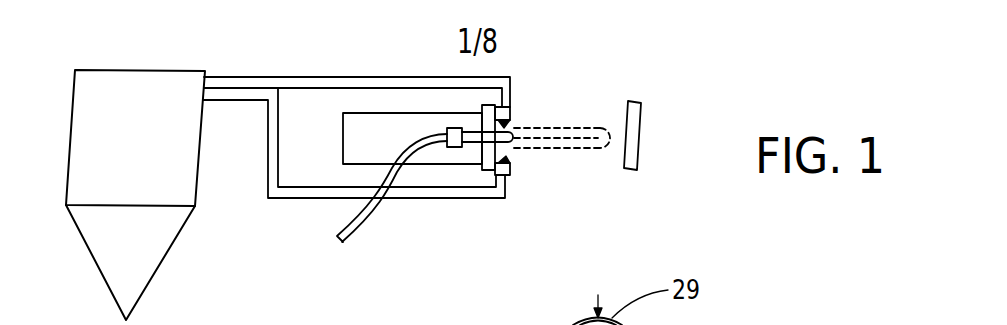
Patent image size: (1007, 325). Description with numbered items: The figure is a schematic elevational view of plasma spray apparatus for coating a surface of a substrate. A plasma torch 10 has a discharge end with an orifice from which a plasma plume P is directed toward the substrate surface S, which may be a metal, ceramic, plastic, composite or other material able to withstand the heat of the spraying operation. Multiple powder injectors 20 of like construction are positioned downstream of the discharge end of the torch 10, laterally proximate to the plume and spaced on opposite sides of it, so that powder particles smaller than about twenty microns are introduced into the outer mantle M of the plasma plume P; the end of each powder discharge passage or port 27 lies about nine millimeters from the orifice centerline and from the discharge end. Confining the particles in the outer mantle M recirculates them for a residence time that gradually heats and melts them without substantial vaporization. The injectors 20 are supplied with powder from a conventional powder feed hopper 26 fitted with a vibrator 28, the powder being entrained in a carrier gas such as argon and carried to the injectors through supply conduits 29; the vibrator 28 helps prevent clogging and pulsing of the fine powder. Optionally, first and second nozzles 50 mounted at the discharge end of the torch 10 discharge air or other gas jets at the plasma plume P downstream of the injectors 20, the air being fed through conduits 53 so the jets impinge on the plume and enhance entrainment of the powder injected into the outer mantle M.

The plasma torch 10 is at (343, 148).
The powder injectors 20 is at (516, 119).
The powder feed hopper 26 is at (156, 80).
The powder discharge passage or port 27 is at (313, 84).
The vibrator 28 is at (140, 267).
The supply conduits 29 is at (284, 199).
The nozzles 50 is at (468, 138).
The conduits 53 is at (340, 240).
The plasma plume P is at (597, 127).
The substrate surface S is at (628, 172).
The outer mantle M is at (597, 127).